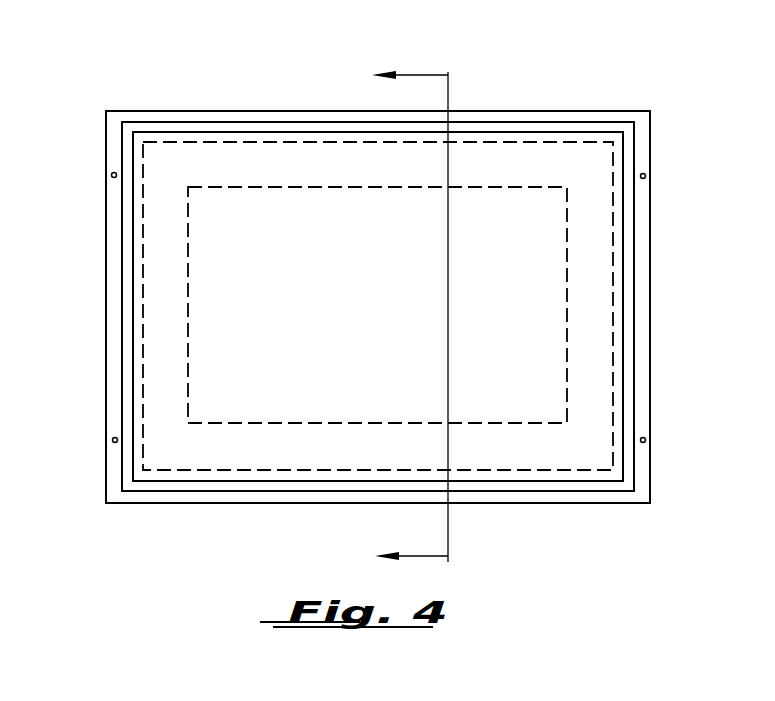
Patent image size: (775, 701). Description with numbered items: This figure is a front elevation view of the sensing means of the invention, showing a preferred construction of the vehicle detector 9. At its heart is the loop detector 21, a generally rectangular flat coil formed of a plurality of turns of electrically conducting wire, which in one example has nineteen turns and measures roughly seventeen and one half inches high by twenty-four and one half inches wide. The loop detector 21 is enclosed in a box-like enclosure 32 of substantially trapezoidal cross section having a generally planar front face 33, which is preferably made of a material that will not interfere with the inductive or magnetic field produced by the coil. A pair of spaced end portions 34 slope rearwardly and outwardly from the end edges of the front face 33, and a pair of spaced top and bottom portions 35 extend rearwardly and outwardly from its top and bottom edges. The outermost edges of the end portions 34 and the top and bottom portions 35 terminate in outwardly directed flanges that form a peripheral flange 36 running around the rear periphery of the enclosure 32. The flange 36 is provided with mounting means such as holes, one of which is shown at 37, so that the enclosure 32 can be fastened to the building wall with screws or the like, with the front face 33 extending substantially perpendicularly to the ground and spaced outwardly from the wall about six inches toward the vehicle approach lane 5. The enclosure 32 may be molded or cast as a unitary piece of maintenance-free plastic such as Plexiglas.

The vehicle detector 9 is at (108, 302).
The loop detector 21 is at (182, 315).
The enclosure 32 is at (272, 111).
The front face 33 is at (415, 302).
The end portions 34 is at (130, 225).
The top and bottom portions 35 is at (457, 127).
The peripheral flange 36 is at (248, 498).
The hole 37 is at (114, 443).
The vehicle approach lane 5 is at (397, 317).